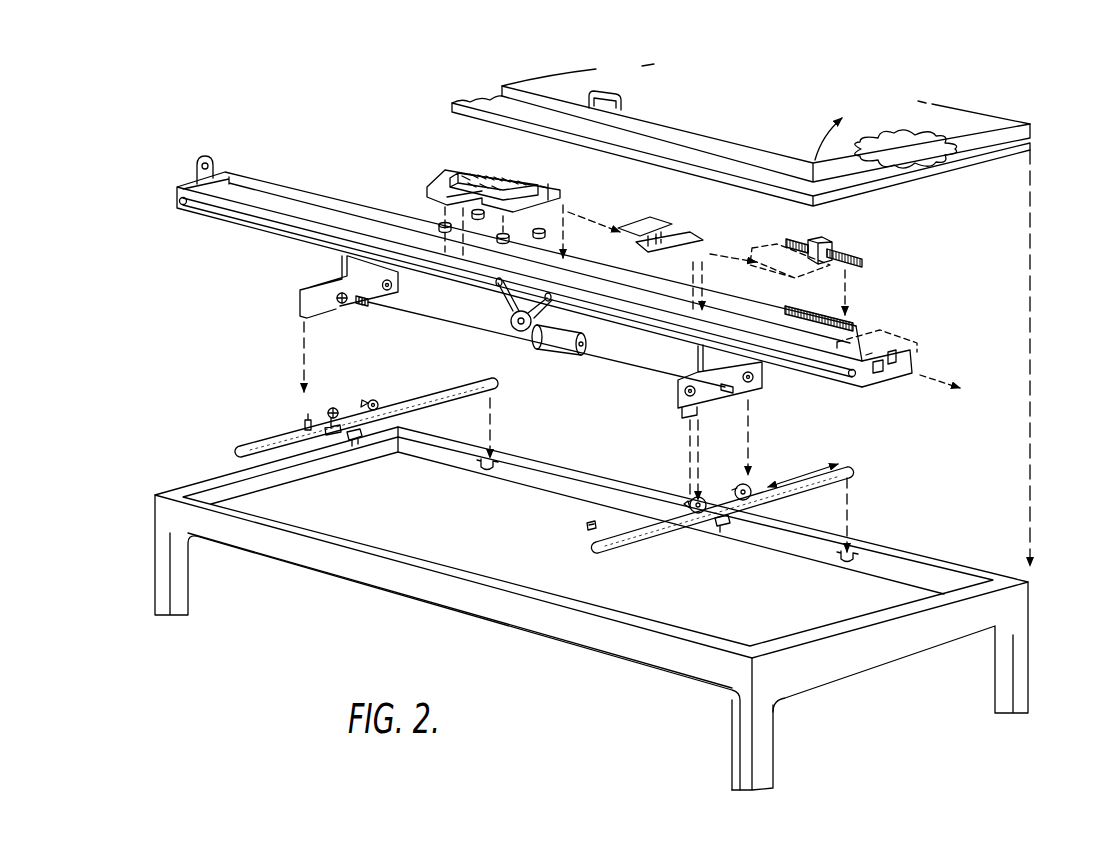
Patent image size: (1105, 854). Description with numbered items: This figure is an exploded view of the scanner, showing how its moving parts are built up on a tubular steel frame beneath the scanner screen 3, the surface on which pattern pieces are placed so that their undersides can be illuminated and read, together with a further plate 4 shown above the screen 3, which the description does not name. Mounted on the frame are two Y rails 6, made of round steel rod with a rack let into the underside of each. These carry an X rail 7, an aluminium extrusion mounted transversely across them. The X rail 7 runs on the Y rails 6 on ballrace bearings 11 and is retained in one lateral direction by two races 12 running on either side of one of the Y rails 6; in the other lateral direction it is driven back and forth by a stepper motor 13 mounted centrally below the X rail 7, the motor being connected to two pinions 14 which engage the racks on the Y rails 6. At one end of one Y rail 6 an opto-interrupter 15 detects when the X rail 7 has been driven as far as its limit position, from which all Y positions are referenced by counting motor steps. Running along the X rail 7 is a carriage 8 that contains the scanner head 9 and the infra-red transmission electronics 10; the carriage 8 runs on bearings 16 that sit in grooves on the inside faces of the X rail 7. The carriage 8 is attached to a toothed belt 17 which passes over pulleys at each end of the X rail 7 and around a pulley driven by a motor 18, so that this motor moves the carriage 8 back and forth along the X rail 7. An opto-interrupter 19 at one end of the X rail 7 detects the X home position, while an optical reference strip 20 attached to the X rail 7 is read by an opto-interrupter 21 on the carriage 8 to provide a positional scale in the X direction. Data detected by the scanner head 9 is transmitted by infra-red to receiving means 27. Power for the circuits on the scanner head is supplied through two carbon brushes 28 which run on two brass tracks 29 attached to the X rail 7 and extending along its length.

The scanner screen 3 is at (900, 183).
The cover plate 4 is at (1013, 122).
The Y rails 6 is at (262, 442).
The X rail 7 is at (305, 246).
The carriage 8 is at (553, 193).
The scanner head 9 is at (530, 185).
The infra-red transmission electronics 10 is at (456, 168).
The ballrace bearings 11 is at (372, 401).
The races 12 is at (303, 424).
The stepper motor 13 is at (560, 356).
The pinions 14 is at (355, 443).
The opto-interrupter 15 is at (585, 527).
The bearings 16 is at (440, 222).
The toothed belt 17 is at (225, 220).
The motor 18 is at (497, 318).
The opto-interrupter 19 is at (878, 374).
The optical reference strip 20 is at (863, 254).
The opto-interrupter 21 is at (826, 249).
The receiving means 27 is at (198, 163).
The carbon brushes 28 is at (670, 228).
The brass tracks 29 is at (700, 250).